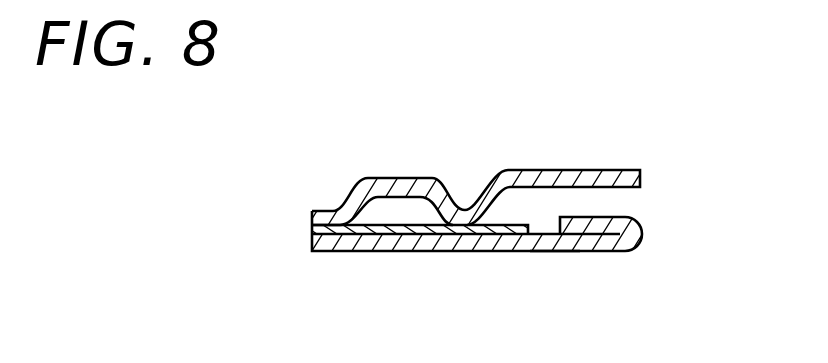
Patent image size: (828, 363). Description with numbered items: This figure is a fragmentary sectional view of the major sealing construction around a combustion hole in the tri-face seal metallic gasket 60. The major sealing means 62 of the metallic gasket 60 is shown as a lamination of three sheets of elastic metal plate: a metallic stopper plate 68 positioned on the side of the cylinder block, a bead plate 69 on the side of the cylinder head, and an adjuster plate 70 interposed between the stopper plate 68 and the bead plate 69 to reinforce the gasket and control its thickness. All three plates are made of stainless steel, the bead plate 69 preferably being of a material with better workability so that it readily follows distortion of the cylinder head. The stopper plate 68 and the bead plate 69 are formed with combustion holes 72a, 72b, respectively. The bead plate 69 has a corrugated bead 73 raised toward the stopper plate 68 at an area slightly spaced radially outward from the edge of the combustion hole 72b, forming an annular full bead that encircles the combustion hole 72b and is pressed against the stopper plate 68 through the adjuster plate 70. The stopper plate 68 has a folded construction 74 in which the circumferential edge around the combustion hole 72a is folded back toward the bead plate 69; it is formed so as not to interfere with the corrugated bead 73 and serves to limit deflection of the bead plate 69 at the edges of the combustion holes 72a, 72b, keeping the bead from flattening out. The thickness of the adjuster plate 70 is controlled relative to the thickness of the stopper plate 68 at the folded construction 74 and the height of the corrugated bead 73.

The metallic gasket 60 is at (368, 165).
The major sealing means 62 is at (473, 278).
The stopper plate 68 is at (547, 255).
The bead plate 69 is at (542, 162).
The adjuster plate 70 is at (398, 229).
The combustion hole 72a is at (641, 234).
The combustion hole 72b is at (640, 177).
The corrugated bead 73 is at (470, 210).
The folded construction 74 is at (618, 252).